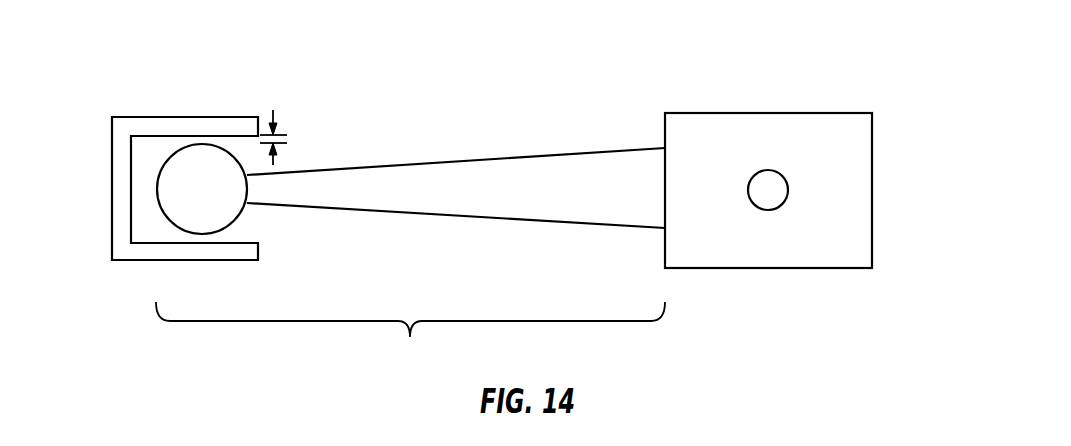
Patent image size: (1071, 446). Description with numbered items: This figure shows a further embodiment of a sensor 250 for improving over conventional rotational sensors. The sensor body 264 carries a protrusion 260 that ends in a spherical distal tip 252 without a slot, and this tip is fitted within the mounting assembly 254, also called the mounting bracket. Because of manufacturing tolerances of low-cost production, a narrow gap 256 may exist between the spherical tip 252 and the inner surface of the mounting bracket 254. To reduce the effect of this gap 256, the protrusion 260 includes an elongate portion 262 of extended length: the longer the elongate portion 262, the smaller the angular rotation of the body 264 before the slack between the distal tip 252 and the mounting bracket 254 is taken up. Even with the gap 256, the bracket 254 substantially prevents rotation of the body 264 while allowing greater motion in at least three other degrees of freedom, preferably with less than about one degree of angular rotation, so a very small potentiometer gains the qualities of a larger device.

The sensor 250 is at (520, 82).
The spherical distal tip 252 is at (188, 224).
The mounting assembly 254 is at (157, 166).
The gap 256 is at (314, 124).
The protrusion 260 is at (410, 338).
The elongate portion 262 is at (456, 220).
The sensor body 264 is at (807, 189).